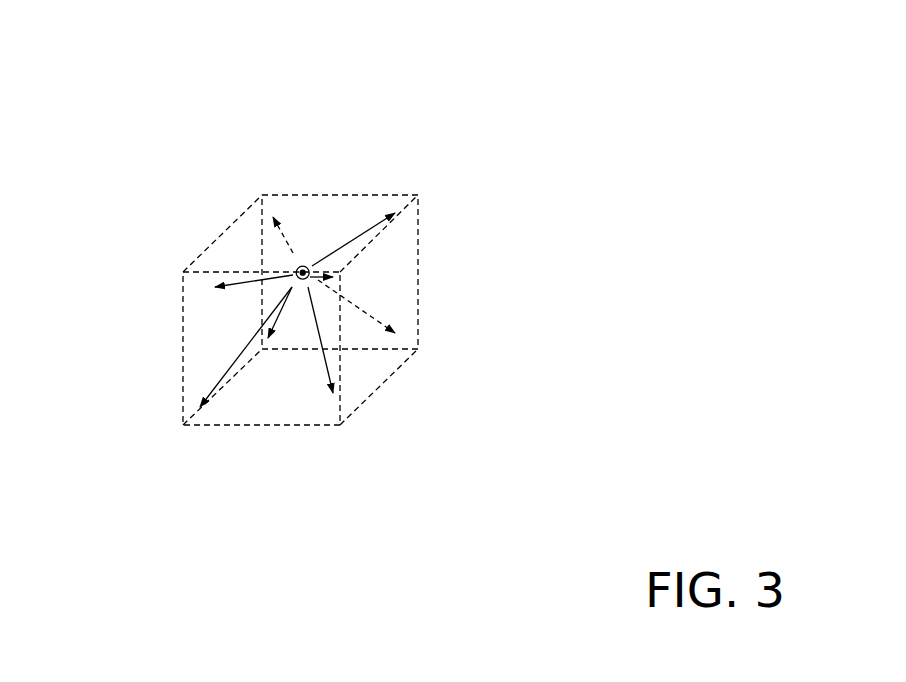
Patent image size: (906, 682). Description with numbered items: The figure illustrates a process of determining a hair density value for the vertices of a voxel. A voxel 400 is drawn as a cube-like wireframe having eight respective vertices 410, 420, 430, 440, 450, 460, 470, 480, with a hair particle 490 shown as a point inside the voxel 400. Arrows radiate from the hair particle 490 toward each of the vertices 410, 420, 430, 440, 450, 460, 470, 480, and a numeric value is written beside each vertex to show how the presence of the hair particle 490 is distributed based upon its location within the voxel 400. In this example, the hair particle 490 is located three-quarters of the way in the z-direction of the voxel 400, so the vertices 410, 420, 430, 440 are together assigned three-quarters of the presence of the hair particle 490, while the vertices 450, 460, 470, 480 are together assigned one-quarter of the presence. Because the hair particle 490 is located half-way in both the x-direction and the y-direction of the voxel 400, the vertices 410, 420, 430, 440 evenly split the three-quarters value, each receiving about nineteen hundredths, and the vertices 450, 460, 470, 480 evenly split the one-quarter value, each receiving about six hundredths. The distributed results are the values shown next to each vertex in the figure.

The voxel 400 is at (575, 82).
The vertex 410 is at (183, 270).
The vertex 420 is at (262, 195).
The vertex 430 is at (418, 193).
The vertex 440 is at (340, 272).
The vertex 450 is at (183, 425).
The vertex 460 is at (262, 348).
The vertex 470 is at (417, 349).
The vertex 480 is at (340, 425).
The hair particle 490 is at (303, 266).